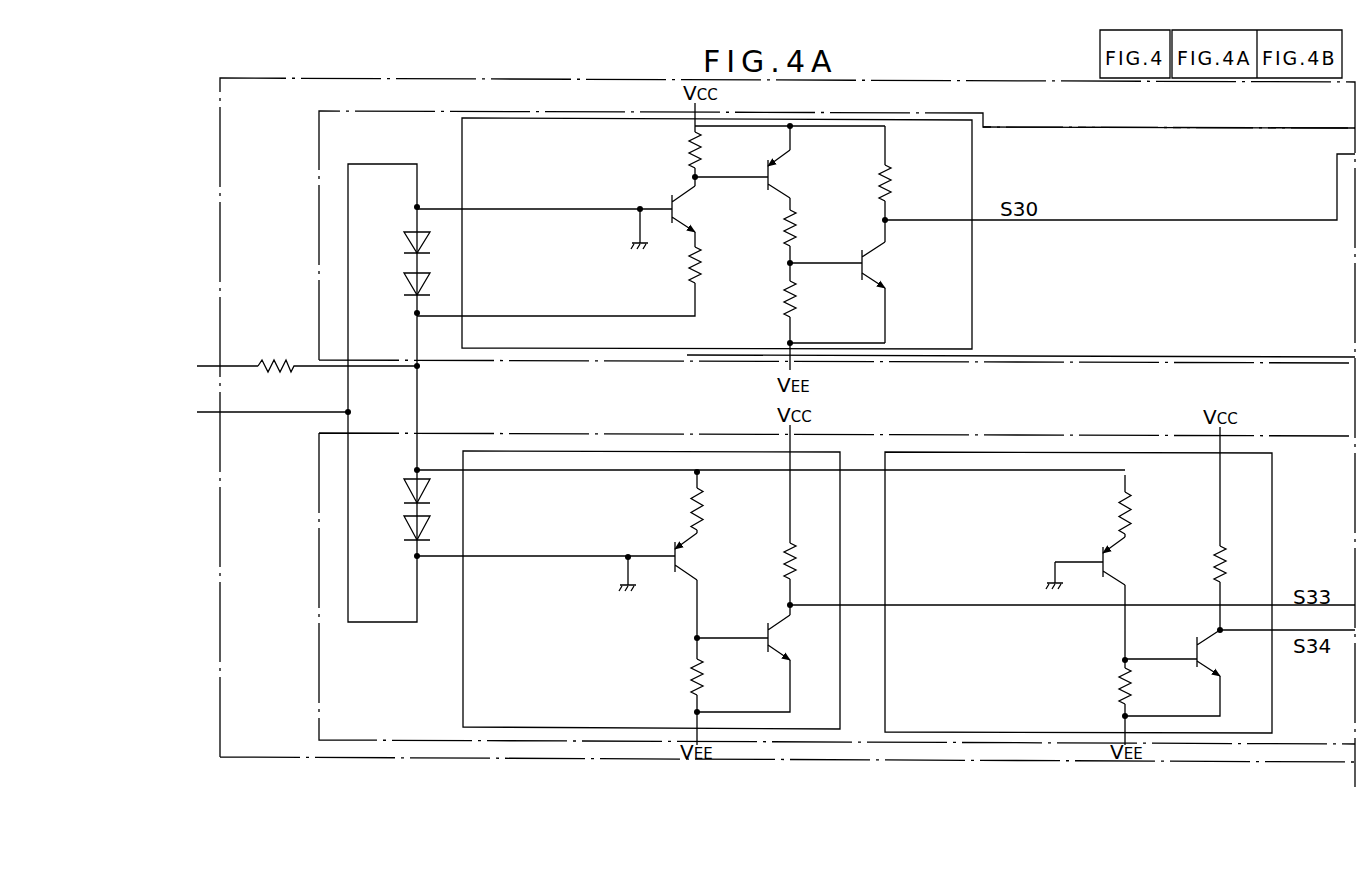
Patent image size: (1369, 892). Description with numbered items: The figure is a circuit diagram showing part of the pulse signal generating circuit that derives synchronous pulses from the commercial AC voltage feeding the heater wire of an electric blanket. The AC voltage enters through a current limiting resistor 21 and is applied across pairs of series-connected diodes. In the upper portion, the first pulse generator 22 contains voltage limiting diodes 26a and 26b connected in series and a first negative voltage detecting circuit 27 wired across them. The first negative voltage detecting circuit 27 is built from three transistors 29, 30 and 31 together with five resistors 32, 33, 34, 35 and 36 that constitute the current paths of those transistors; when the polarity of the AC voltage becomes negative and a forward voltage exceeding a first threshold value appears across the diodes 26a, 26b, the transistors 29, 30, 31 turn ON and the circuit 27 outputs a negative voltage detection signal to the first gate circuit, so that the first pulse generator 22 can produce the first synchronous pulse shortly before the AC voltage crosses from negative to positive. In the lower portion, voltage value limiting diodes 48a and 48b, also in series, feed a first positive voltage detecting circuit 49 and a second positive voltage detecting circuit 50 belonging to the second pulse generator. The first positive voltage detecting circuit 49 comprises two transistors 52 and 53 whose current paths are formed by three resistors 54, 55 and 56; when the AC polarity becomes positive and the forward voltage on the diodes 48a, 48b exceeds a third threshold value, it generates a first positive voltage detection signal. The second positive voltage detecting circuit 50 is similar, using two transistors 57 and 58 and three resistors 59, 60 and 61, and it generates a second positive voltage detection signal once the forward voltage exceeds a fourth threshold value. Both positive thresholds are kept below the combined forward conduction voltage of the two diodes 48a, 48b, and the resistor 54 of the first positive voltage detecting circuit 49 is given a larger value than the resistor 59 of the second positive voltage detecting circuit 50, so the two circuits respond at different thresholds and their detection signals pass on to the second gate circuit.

The current limiting resistor 21 is at (258, 360).
The first pulse generator 22 is at (1145, 127).
The voltage limiting diode 26a is at (404, 243).
The voltage limiting diode 26b is at (404, 288).
The first negative voltage detecting circuit 27 is at (462, 138).
The transistor 29 is at (690, 200).
The transistor 30 is at (784, 163).
The transistor 31 is at (872, 250).
The resistor 32 is at (690, 143).
The resistor 33 is at (698, 265).
The resistor 34 is at (797, 228).
The resistor 35 is at (798, 312).
The resistor 36 is at (891, 183).
The voltage value limiting diode 48a is at (404, 487).
The voltage value limiting diode 48b is at (404, 522).
The first positive voltage detecting circuit 49 is at (463, 625).
The second positive voltage detecting circuit 50 is at (1272, 535).
The transistor 52 is at (688, 548).
The transistor 53 is at (782, 622).
The resistor 54 is at (700, 680).
The resistor 55 is at (692, 505).
The resistor 56 is at (786, 552).
The transistor 57 is at (1118, 572).
The transistor 58 is at (1210, 640).
The resistor 59 is at (1132, 690).
The resistor 60 is at (1122, 497).
The resistor 61 is at (1214, 558).